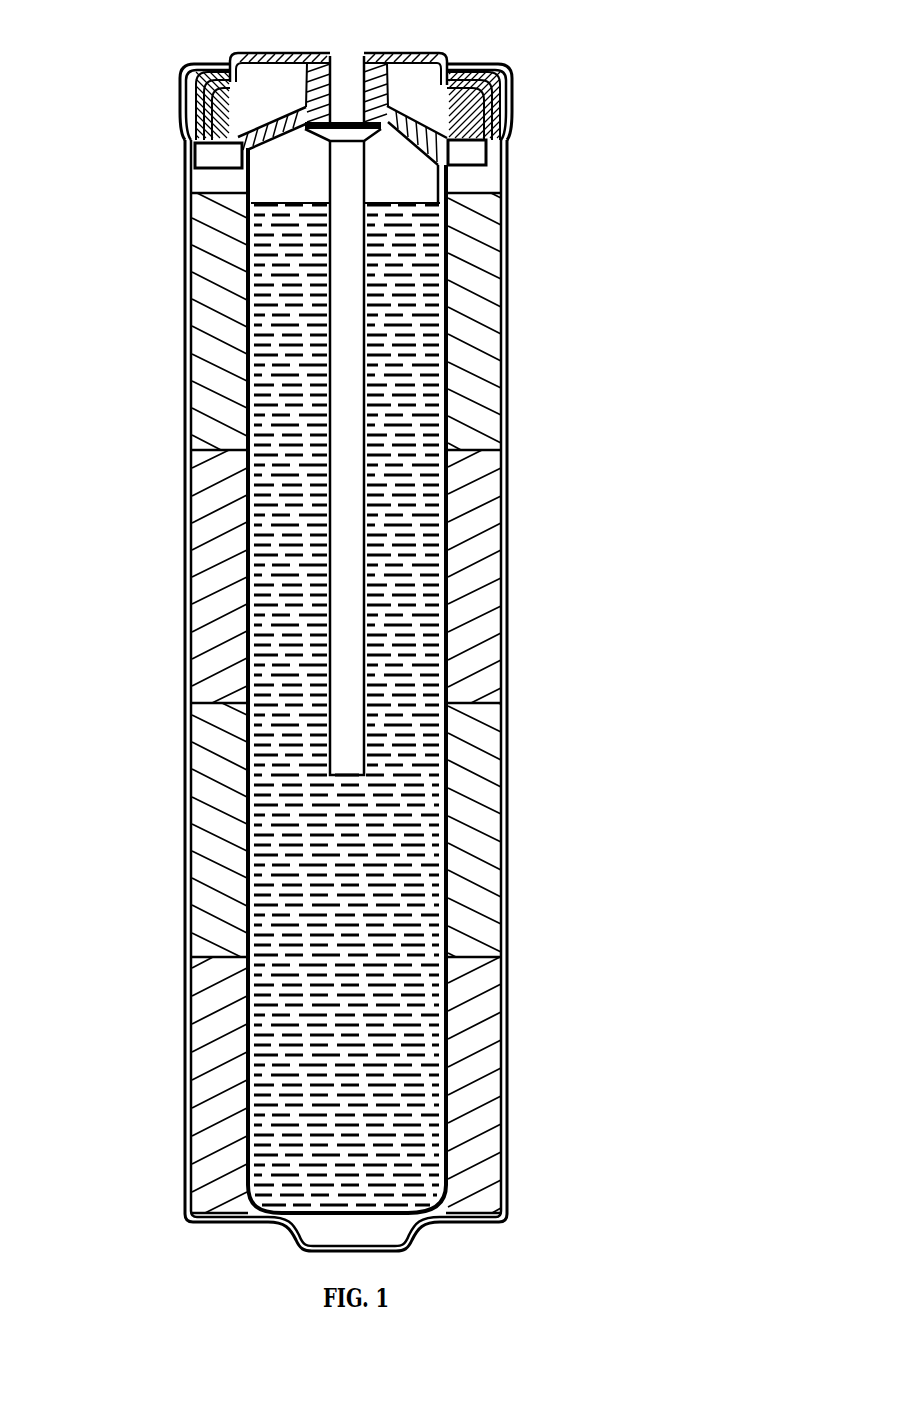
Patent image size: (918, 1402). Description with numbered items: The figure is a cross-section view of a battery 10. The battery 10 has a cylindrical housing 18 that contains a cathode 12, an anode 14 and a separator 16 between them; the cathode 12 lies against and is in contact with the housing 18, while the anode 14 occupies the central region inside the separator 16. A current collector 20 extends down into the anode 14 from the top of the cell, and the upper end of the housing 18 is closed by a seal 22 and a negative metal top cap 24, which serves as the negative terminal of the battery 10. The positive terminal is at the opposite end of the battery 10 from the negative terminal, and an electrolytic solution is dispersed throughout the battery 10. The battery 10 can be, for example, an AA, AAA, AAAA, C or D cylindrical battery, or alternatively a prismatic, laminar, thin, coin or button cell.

The battery 10 is at (634, 142).
The cathode 12 is at (487, 295).
The anode 14 is at (413, 809).
The separator 16 is at (248, 628).
The cylindrical housing 18 is at (187, 410).
The current collector 20 is at (350, 575).
The seal 22 is at (190, 140).
The negative metal top cap 24 is at (447, 52).